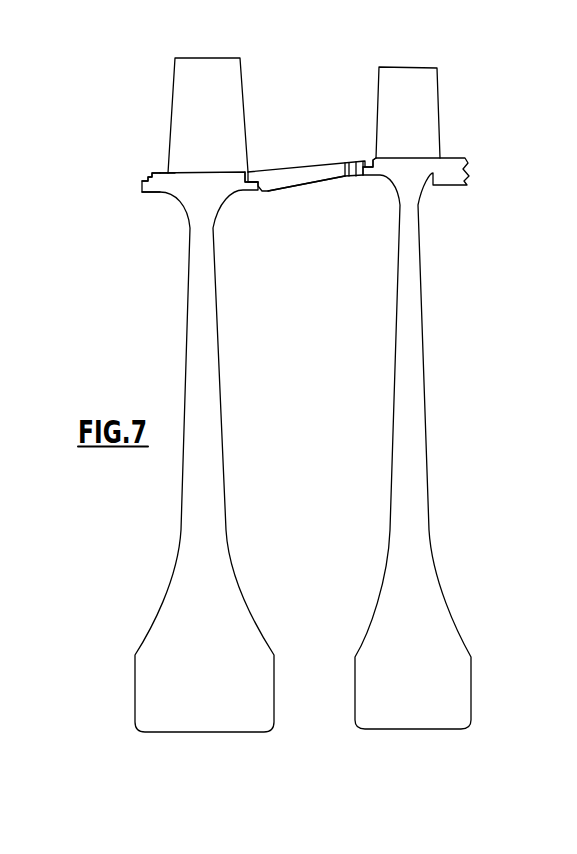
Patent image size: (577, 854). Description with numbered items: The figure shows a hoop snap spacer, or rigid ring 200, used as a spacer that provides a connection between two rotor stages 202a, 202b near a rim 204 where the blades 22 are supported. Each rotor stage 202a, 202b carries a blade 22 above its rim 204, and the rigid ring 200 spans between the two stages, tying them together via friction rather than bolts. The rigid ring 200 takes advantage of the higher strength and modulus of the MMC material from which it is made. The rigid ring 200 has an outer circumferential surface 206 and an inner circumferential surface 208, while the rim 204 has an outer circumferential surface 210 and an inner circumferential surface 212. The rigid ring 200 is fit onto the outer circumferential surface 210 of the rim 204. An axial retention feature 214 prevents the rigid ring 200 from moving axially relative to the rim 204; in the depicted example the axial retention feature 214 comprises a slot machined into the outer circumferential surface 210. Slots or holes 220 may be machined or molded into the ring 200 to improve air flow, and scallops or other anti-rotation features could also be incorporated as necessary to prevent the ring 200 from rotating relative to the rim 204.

The blades 22 is at (224, 119).
The rigid ring 200 is at (302, 170).
The rotor stage 202a is at (138, 146).
The rotor stage 202b is at (445, 112).
The rim 204 is at (155, 173).
The outer circumferential surface 206 is at (325, 163).
The inner circumferential surface 208 is at (321, 187).
The outer circumferential surface 210 is at (165, 170).
The inner circumferential surface 212 is at (158, 195).
The axial retention feature 214 is at (244, 176).
The slots or holes 220 is at (353, 177).